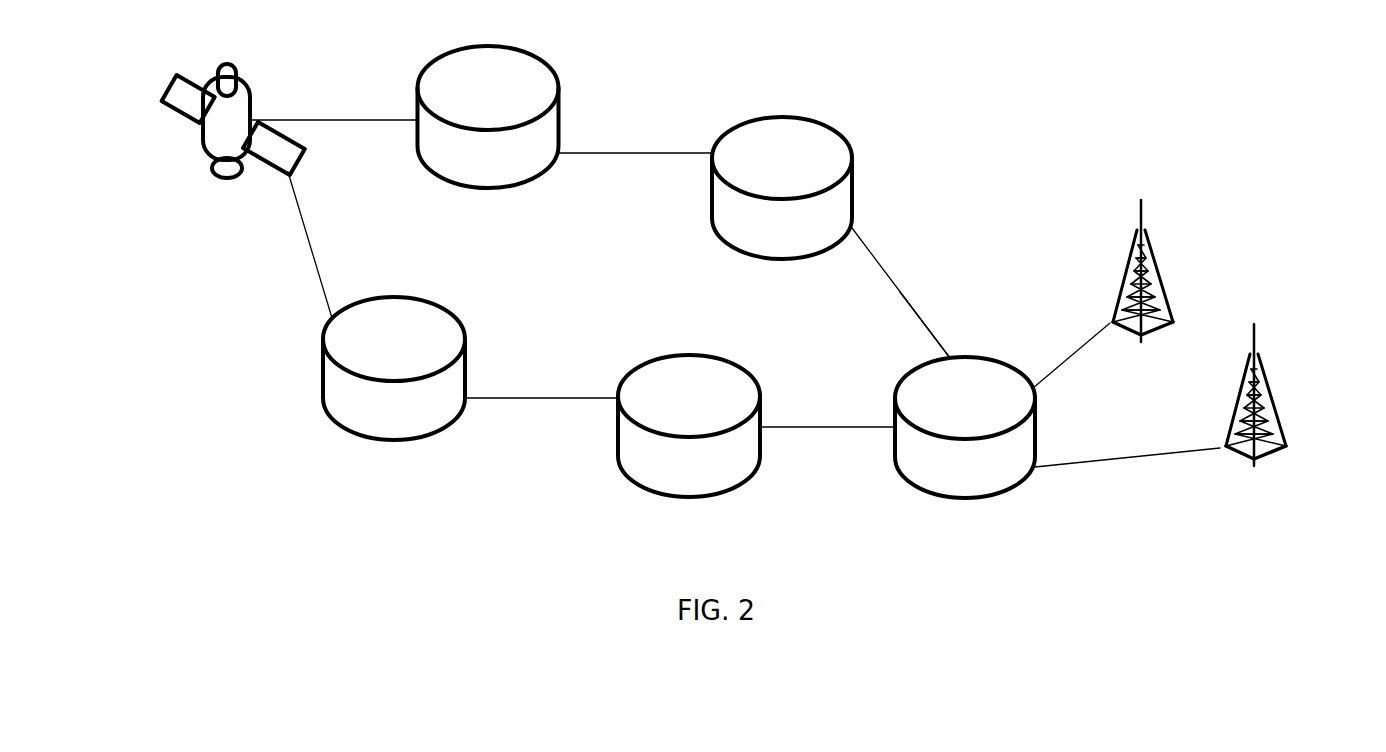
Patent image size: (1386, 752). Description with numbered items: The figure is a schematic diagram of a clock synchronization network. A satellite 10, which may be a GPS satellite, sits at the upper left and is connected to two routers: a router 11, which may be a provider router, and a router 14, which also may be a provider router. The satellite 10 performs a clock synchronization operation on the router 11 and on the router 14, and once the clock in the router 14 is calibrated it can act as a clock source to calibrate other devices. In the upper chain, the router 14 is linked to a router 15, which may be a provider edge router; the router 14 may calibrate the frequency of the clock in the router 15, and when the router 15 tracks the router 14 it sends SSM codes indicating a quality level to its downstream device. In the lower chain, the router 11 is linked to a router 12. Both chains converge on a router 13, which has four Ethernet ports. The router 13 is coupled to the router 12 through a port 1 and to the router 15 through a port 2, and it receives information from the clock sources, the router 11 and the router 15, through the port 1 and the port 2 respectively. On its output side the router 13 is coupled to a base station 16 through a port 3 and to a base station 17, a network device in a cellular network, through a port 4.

The satellite 10 is at (233, 141).
The router 11 is at (394, 391).
The router 12 is at (689, 444).
The router 13 is at (965, 447).
The router 14 is at (488, 136).
The router 15 is at (782, 207).
The base station 16 is at (1160, 303).
The base station 17 is at (1268, 416).
The port 1 is at (827, 445).
The port 2 is at (900, 325).
The port 3 is at (1071, 365).
The port 4 is at (1127, 476).